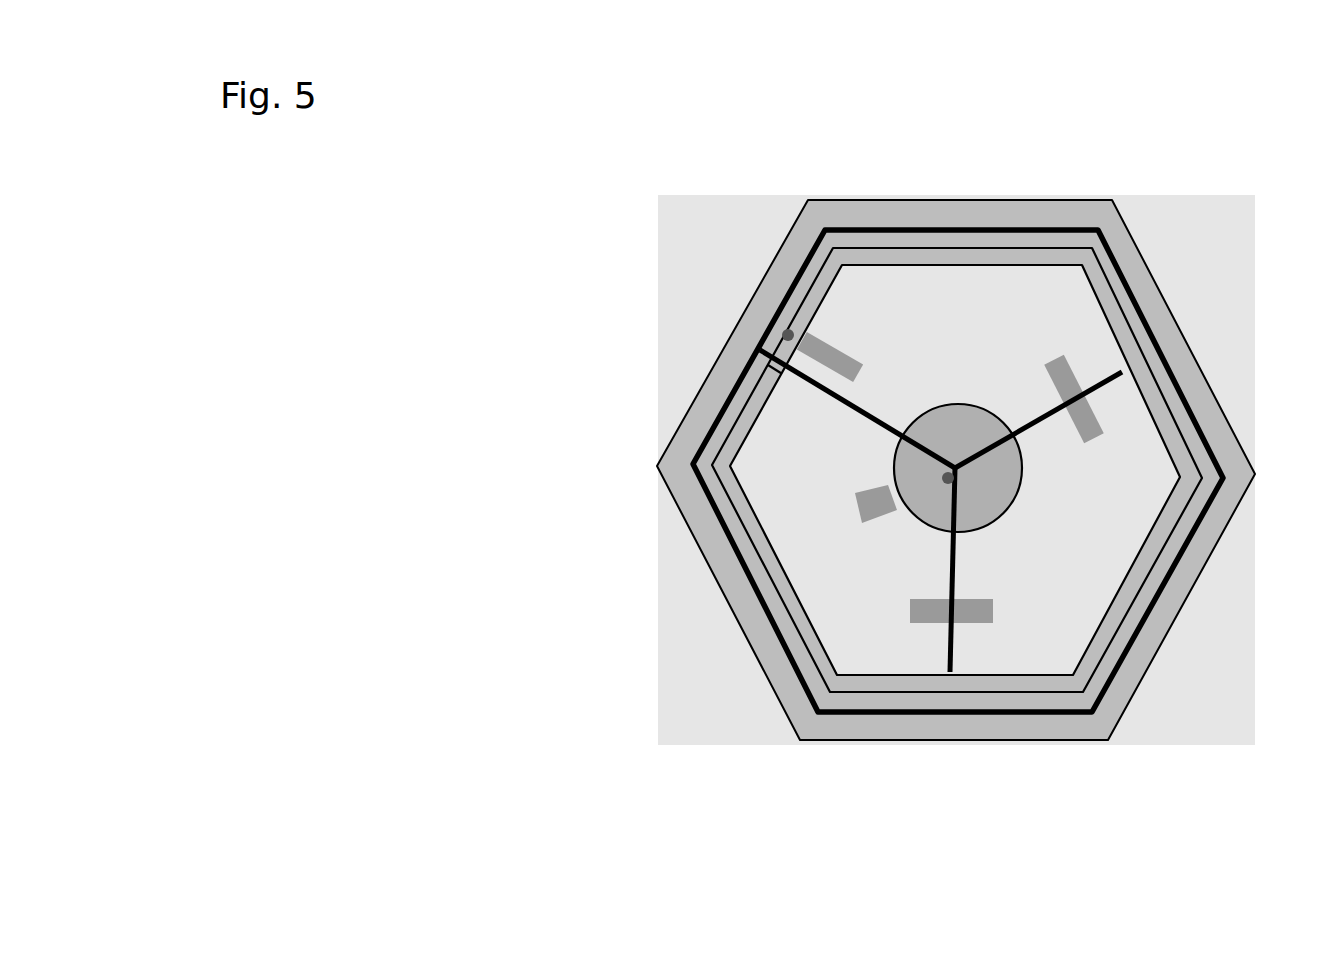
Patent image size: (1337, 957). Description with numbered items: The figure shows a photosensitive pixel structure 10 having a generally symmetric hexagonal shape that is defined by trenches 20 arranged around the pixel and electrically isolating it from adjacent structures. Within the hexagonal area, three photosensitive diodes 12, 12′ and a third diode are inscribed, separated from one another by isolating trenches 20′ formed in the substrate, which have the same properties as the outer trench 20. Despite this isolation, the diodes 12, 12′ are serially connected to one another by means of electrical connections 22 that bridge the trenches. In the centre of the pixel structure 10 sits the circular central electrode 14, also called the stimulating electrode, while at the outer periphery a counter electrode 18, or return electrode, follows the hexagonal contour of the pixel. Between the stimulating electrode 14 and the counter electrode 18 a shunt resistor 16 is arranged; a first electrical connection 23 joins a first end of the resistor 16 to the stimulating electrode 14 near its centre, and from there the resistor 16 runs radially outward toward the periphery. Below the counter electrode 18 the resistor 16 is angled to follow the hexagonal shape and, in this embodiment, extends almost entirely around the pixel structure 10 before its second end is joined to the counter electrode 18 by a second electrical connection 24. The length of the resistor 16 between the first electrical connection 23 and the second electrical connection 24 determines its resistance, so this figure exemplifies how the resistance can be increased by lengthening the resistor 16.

The photosensitive pixel structure 10 is at (688, 576).
The photosensitive diode 12 is at (840, 572).
The photosensitive diode 12′ is at (1035, 590).
The central electrode 14 is at (960, 435).
The resistor 16 is at (765, 380).
The counter electrode 18 is at (812, 663).
The trench 20 is at (786, 330).
The isolating trench 20′ is at (1038, 425).
The electrical contact 22 is at (1065, 383).
The first electrical connection 23 is at (940, 480).
The second electrical connection 24 is at (786, 338).